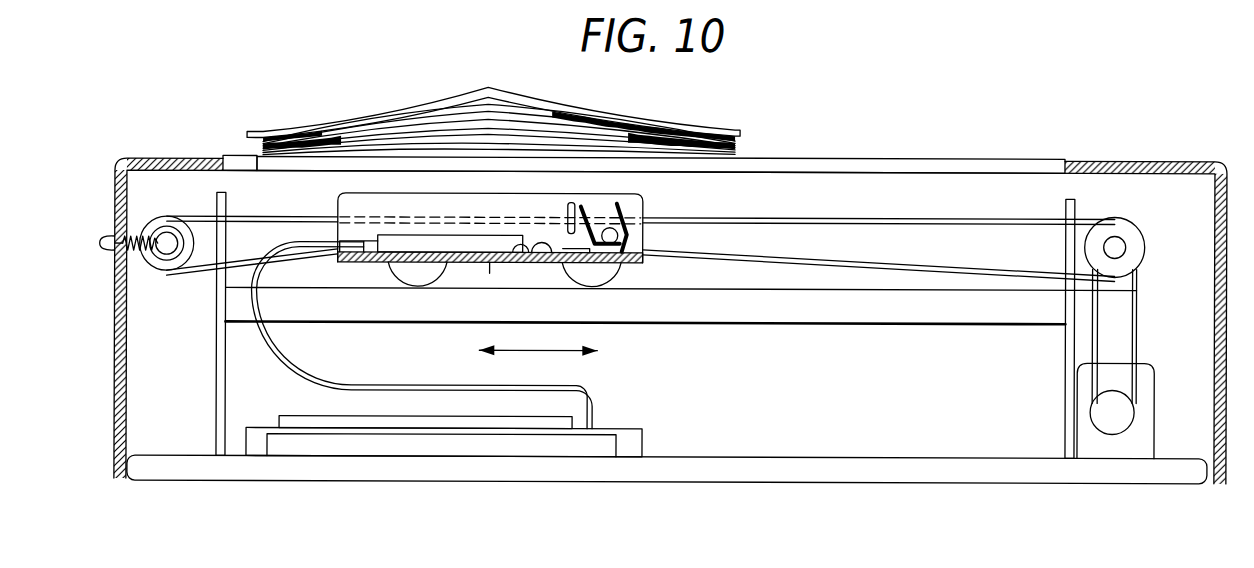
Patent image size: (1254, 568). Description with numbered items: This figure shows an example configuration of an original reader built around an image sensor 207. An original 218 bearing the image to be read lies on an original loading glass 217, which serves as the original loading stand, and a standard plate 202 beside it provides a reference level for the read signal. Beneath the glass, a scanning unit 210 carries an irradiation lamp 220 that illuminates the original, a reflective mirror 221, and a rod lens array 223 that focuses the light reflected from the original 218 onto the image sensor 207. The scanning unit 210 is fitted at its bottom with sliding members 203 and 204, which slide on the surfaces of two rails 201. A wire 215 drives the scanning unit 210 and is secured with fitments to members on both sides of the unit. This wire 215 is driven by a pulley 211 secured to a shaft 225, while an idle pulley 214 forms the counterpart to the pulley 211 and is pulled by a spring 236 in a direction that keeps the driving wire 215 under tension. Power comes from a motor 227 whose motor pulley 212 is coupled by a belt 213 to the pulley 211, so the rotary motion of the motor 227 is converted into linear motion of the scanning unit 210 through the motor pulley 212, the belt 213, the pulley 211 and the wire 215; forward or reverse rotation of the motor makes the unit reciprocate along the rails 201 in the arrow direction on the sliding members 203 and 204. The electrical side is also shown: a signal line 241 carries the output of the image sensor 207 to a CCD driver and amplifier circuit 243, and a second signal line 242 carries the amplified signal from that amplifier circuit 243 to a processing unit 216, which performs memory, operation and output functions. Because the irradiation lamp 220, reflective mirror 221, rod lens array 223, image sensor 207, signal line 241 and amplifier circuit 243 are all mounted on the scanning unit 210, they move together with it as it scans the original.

The rails 201 is at (853, 322).
The standard plate 202 is at (233, 154).
The sliding member 203 is at (392, 271).
The sliding member 204 is at (612, 272).
The image sensor 207 is at (555, 265).
The scanning unit 210 is at (487, 250).
The pulley 211 is at (1132, 230).
The motor pulley 212 is at (1120, 413).
The belt 213 is at (1142, 292).
The idle pulley 214 is at (166, 264).
The wire 215 is at (942, 220).
The processing unit 216 is at (297, 416).
The original loading glass 217 is at (994, 157).
The original 218 is at (678, 131).
The irradiation lamp 220 is at (622, 236).
The reflective mirror 221 is at (626, 206).
The rod lens array 223 is at (566, 205).
The shaft 225 is at (1120, 245).
The motor 227 is at (1152, 365).
The spring 236 is at (104, 255).
The signal line 241 is at (506, 265).
The signal line 242 is at (300, 368).
The CCD driver and amplifier circuit 243 is at (390, 240).